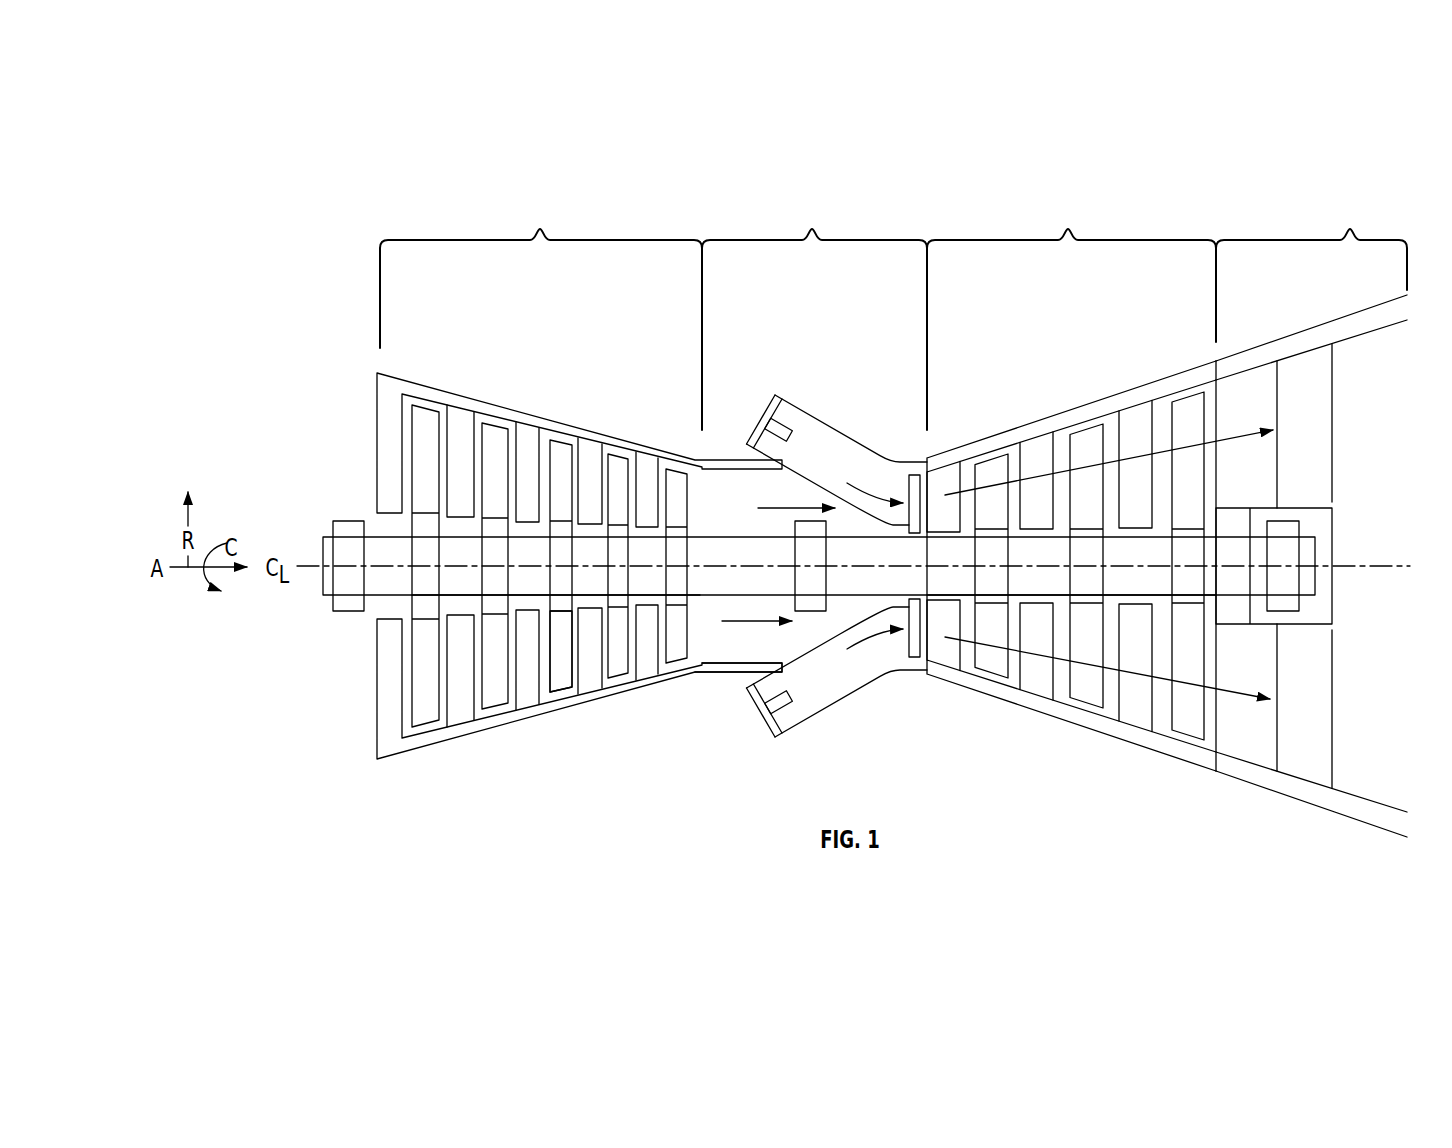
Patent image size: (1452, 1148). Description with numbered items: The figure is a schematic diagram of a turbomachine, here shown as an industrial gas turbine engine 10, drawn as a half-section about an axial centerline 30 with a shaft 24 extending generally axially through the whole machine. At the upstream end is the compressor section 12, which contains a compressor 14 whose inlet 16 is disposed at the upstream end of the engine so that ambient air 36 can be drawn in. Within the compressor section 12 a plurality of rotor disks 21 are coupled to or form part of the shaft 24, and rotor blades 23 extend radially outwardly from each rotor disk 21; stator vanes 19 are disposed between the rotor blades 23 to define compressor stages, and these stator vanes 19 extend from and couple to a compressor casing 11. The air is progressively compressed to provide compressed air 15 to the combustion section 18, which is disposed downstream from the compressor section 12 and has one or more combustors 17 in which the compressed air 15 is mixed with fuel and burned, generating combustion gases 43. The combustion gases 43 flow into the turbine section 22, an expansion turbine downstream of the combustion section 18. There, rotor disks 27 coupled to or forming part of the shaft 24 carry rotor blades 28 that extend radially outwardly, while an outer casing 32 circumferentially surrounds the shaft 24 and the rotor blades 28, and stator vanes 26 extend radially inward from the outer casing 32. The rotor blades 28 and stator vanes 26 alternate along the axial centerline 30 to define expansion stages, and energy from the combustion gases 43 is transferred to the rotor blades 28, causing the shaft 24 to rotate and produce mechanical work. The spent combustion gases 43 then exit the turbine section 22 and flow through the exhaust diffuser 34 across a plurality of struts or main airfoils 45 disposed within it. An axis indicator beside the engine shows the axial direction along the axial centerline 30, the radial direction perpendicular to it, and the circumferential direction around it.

The gas turbine engine 10 is at (1153, 190).
The compressor casing 11 is at (677, 664).
The compressor section 12 is at (541, 312).
The compressor 14 is at (442, 724).
The compressed air 15 is at (800, 507).
The inlet 16 is at (375, 432).
The combustors 17 is at (800, 406).
The combustion section 18 is at (814, 312).
The stator vanes 19 is at (458, 708).
The rotor disks 21 is at (563, 600).
The turbine section 22 is at (1071, 268).
The rotor blades 23 is at (560, 675).
The shaft 24 is at (718, 543).
The stator vanes 26 is at (1035, 450).
The rotor disks 27 is at (988, 598).
The rotor blades 28 is at (998, 670).
The axial centerline 30 is at (312, 563).
The outer casing 32 is at (1118, 737).
The exhaust diffuser 34 is at (1311, 242).
The ambient air 36 is at (283, 697).
The combustion gases 43 is at (870, 495).
The struts or main airfoils 45 is at (1313, 415).